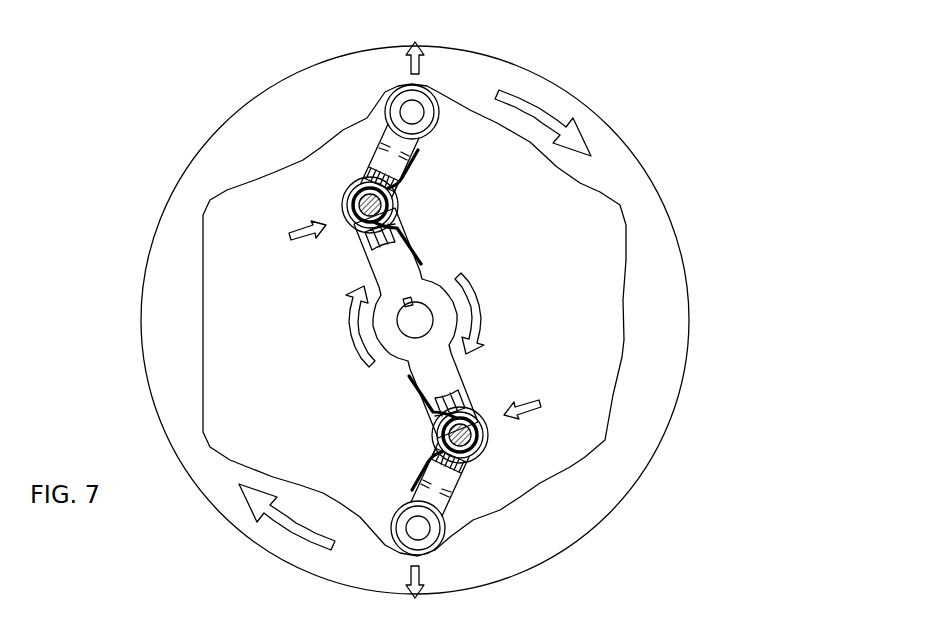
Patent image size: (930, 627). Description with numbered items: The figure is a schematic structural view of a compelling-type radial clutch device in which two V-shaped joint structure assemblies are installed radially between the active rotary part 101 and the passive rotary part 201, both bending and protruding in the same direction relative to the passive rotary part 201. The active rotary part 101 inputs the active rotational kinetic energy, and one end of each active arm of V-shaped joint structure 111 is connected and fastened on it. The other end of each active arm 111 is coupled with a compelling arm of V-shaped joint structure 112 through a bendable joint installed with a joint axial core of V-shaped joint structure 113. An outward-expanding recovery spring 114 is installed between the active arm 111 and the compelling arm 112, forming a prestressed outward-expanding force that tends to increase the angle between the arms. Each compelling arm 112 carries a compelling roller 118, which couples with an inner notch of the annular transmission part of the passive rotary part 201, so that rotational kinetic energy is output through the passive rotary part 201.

The passive rotary part 201 is at (483, 76).
The active rotary part 101 is at (419, 310).
The active arm of V-shaped joint structure 111 is at (390, 270).
The compelling arm of V-shaped joint structure 112 is at (380, 145).
The joint axial core of V-shaped joint structure 113 is at (362, 204).
The outward-expanding recovery spring 114 is at (413, 246).
The compelling roller 118 is at (437, 128).